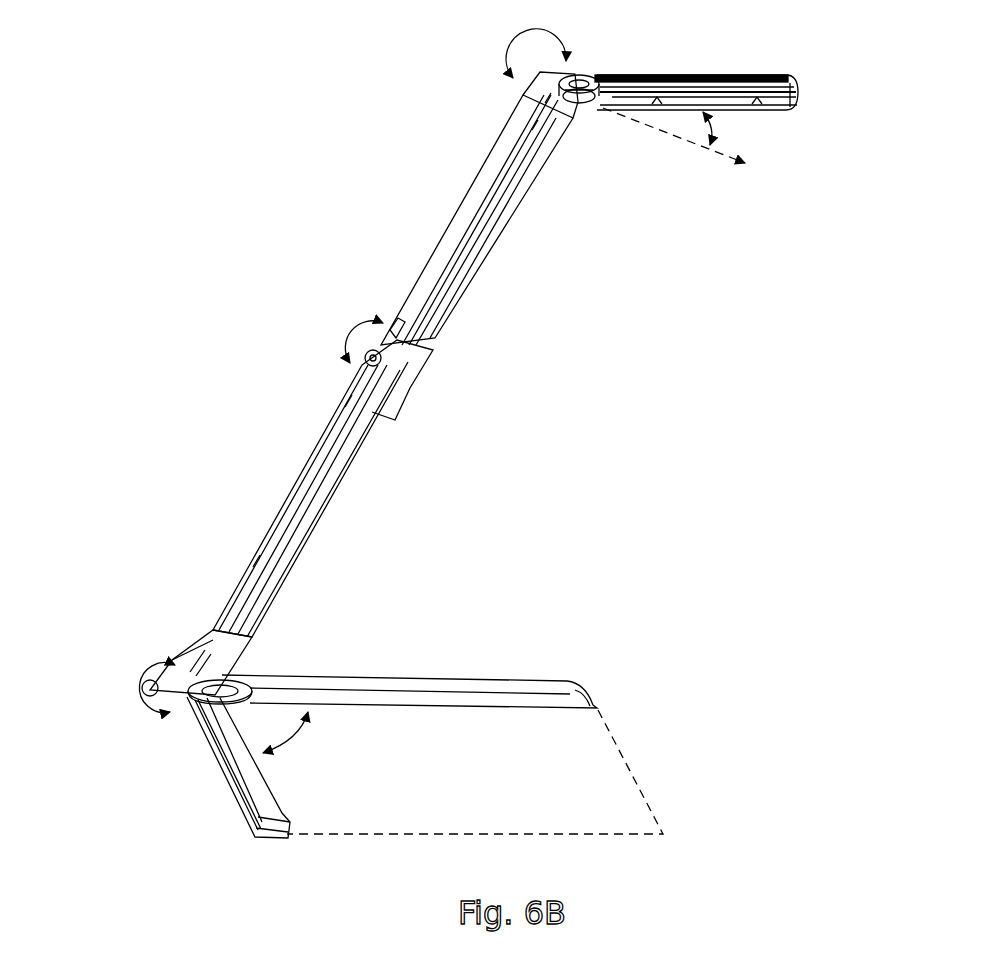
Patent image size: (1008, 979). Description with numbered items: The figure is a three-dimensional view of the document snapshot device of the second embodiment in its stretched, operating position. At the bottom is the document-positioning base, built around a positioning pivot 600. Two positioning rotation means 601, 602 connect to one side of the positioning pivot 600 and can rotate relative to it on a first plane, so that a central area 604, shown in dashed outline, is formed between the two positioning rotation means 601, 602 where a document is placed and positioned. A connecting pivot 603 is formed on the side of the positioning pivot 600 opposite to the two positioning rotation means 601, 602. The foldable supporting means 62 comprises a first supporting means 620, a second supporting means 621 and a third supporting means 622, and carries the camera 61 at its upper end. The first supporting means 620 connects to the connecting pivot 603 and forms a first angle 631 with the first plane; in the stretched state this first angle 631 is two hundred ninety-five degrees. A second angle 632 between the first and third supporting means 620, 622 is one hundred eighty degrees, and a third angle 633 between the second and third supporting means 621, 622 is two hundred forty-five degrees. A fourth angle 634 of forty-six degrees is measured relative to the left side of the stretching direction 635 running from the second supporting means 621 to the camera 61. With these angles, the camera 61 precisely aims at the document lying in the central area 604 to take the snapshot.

The camera 61 is at (760, 77).
The foldable supporting means 62 is at (337, 417).
The first supporting means 620 is at (337, 498).
The second supporting means 621 is at (583, 108).
The third supporting means 622 is at (487, 243).
The first angle 631 is at (140, 688).
The second angle 632 is at (370, 366).
The third angle 633 is at (534, 42).
The fourth angle 634 is at (731, 128).
The stretching direction 635 is at (700, 144).
The positioning pivot 600 is at (160, 713).
The positioning rotation means 601 is at (217, 772).
The positioning rotation means 602 is at (483, 673).
The connecting pivot 603 is at (140, 680).
The central area 604 is at (625, 758).